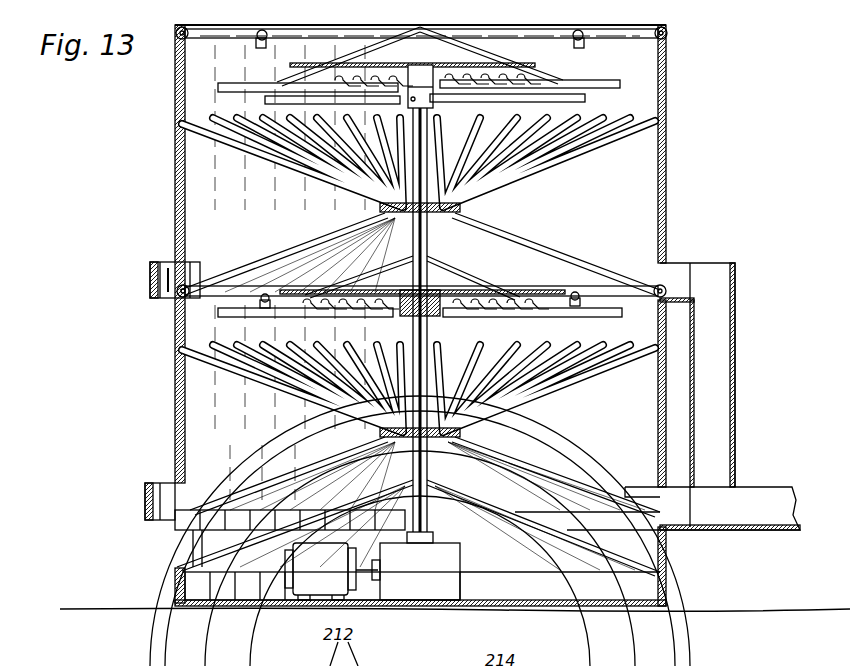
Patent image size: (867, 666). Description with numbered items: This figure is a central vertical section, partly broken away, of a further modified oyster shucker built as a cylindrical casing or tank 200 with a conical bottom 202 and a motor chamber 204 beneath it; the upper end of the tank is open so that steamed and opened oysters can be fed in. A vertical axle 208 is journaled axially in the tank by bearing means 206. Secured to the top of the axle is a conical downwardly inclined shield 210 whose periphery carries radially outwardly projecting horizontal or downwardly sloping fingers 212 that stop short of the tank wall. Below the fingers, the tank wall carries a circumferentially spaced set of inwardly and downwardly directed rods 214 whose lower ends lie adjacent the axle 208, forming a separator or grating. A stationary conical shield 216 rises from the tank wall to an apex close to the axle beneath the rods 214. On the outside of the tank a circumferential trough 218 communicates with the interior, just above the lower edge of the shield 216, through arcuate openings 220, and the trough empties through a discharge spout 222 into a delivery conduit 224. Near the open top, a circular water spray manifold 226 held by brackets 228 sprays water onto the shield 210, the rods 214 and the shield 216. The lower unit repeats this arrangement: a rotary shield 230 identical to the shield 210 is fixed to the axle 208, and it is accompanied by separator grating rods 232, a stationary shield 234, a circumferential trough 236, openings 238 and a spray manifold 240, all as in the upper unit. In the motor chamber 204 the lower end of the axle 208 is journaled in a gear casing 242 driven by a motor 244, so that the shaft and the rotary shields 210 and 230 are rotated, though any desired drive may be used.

The cylindrical casing or tank 200 is at (666, 236).
The conical bottom 202 is at (562, 528).
The motor chamber 204 is at (513, 560).
The bearing means 206 is at (443, 291).
The vertical axle 208 is at (428, 236).
The conical downwardly inclined shield 210 is at (455, 40).
The fingers 212 is at (397, 80).
The rods 214 is at (260, 130).
The conical shield 216 is at (545, 245).
The circumferential trough 218 is at (150, 283).
The arcuate openings 220 is at (205, 268).
The discharge spout 222 is at (718, 365).
The delivery conduit 224 is at (776, 507).
The circular water spray manifold 226 is at (290, 29).
The brackets 228 is at (256, 40).
The rotary shield 230 is at (505, 287).
The separator grating rods 232 is at (268, 372).
The stationary shield 234 is at (262, 477).
The circumferential trough 236 is at (145, 500).
The openings 238 is at (228, 490).
The spray manifold 240 is at (190, 300).
The gear casing 242 is at (440, 556).
The motor 244 is at (342, 550).